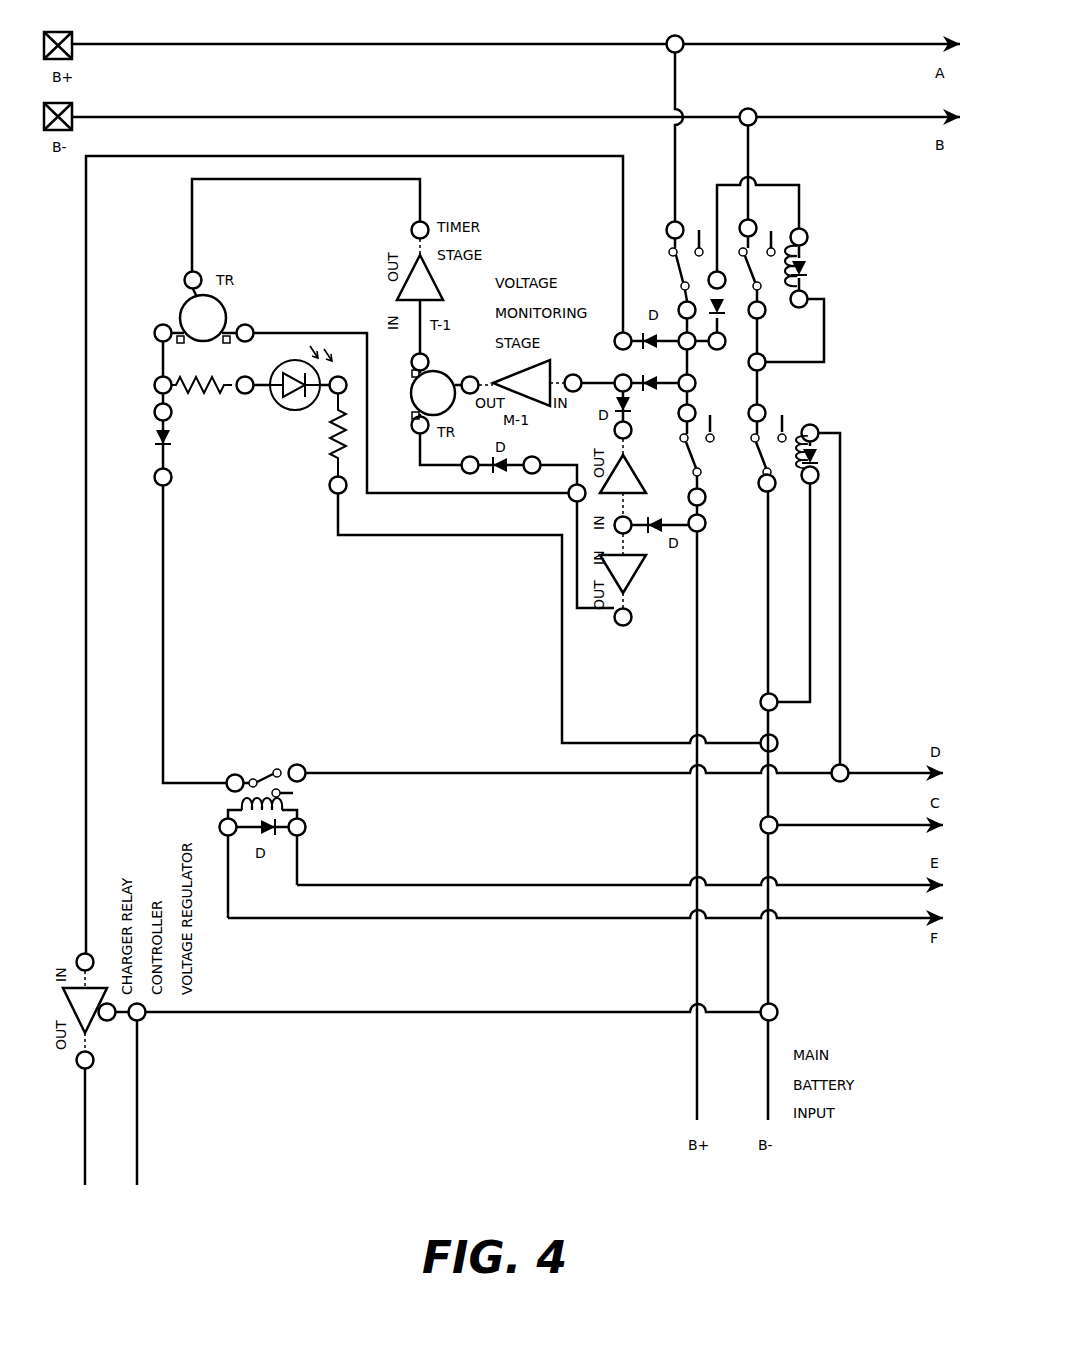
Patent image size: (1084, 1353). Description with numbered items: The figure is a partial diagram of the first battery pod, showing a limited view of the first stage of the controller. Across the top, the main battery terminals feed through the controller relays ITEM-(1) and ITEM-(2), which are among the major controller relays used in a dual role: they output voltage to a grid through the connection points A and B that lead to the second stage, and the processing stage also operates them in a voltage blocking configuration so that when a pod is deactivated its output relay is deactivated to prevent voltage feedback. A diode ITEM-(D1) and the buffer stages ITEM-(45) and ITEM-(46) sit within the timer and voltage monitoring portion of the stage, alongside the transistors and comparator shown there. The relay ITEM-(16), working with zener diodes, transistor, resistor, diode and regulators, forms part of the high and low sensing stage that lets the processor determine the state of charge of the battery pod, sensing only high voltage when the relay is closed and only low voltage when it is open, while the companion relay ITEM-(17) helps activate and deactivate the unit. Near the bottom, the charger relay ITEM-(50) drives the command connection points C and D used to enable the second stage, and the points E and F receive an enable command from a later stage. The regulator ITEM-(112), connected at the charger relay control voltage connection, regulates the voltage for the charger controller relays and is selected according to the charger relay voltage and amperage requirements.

The controller relay 1 is at (680, 586).
The controller relay 2 is at (800, 286).
The diode ITEM- D1 is at (636, 373).
The buffer stage ITEM- 45 is at (644, 463).
The buffer stage ITEM- 46 is at (634, 603).
The sensing relay 16 is at (753, 623).
The controller relay 17 is at (801, 595).
The charger relay ITEM- 50 is at (256, 829).
The regulator 112 is at (420, 1070).